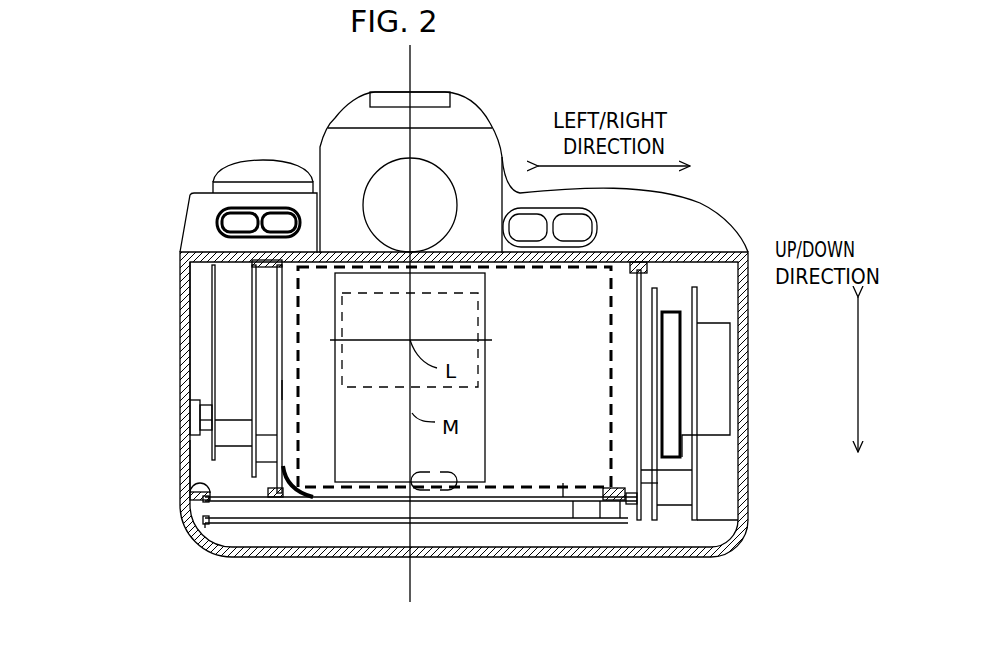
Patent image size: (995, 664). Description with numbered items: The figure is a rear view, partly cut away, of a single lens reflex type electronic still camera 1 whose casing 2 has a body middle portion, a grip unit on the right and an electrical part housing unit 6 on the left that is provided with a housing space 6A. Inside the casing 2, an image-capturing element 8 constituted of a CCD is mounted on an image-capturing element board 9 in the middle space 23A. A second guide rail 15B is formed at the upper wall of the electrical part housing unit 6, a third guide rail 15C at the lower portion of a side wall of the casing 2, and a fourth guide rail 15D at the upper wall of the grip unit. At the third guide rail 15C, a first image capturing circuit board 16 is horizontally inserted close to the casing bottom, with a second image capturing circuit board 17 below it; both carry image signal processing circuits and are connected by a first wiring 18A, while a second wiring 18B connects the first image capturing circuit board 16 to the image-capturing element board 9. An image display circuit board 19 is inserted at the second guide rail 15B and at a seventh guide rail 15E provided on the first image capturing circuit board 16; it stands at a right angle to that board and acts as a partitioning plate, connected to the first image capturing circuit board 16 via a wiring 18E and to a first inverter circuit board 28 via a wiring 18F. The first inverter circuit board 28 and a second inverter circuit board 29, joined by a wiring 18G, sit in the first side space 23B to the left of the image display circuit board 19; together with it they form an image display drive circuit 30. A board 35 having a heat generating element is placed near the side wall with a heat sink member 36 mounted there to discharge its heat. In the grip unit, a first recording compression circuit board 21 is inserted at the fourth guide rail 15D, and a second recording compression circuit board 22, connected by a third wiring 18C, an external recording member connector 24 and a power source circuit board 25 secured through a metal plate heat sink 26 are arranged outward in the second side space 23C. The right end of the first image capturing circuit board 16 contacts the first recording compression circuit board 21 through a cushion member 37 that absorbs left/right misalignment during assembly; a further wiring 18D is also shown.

The single lens reflex type electronic still camera 1 is at (727, 133).
The casing 2 is at (728, 222).
The electrical part housing unit 6 is at (180, 300).
The housing space 6A is at (208, 467).
The image-capturing element 8 is at (485, 292).
The image-capturing element board 9 is at (475, 450).
The second guide rail 15B is at (258, 265).
The third guide rail 15C is at (197, 483).
The fourth guide rail 15D is at (647, 273).
The seventh guide rail 15E is at (268, 490).
The first image capturing circuit board 16 is at (393, 502).
The second image capturing circuit board 17 is at (292, 518).
The first wiring 18A is at (588, 510).
The second wiring 18B is at (443, 490).
The third wiring 18C is at (658, 483).
The electronic component 18D is at (630, 477).
The wiring 18E is at (272, 488).
The wiring 18F is at (205, 527).
The wiring 18G is at (200, 503).
The image display circuit board 19 is at (285, 395).
The first recording compression circuit board 21 is at (633, 383).
The second recording compression circuit board 22 is at (633, 340).
The middle space 23A is at (563, 483).
The first side space 23B is at (717, 518).
The second side space 23C is at (210, 518).
The external recording member connector 24 is at (682, 430).
The power source circuit board 25 is at (700, 383).
The metal plate heat sink 26 is at (715, 355).
The first inverter circuit board 28 is at (250, 320).
The second inverter circuit board 29 is at (218, 387).
The image display drive circuit 30 is at (283, 428).
The board having a heat generating element 35 is at (200, 410).
The heat sink member 36 is at (193, 420).
The cushion member 37 is at (623, 505).